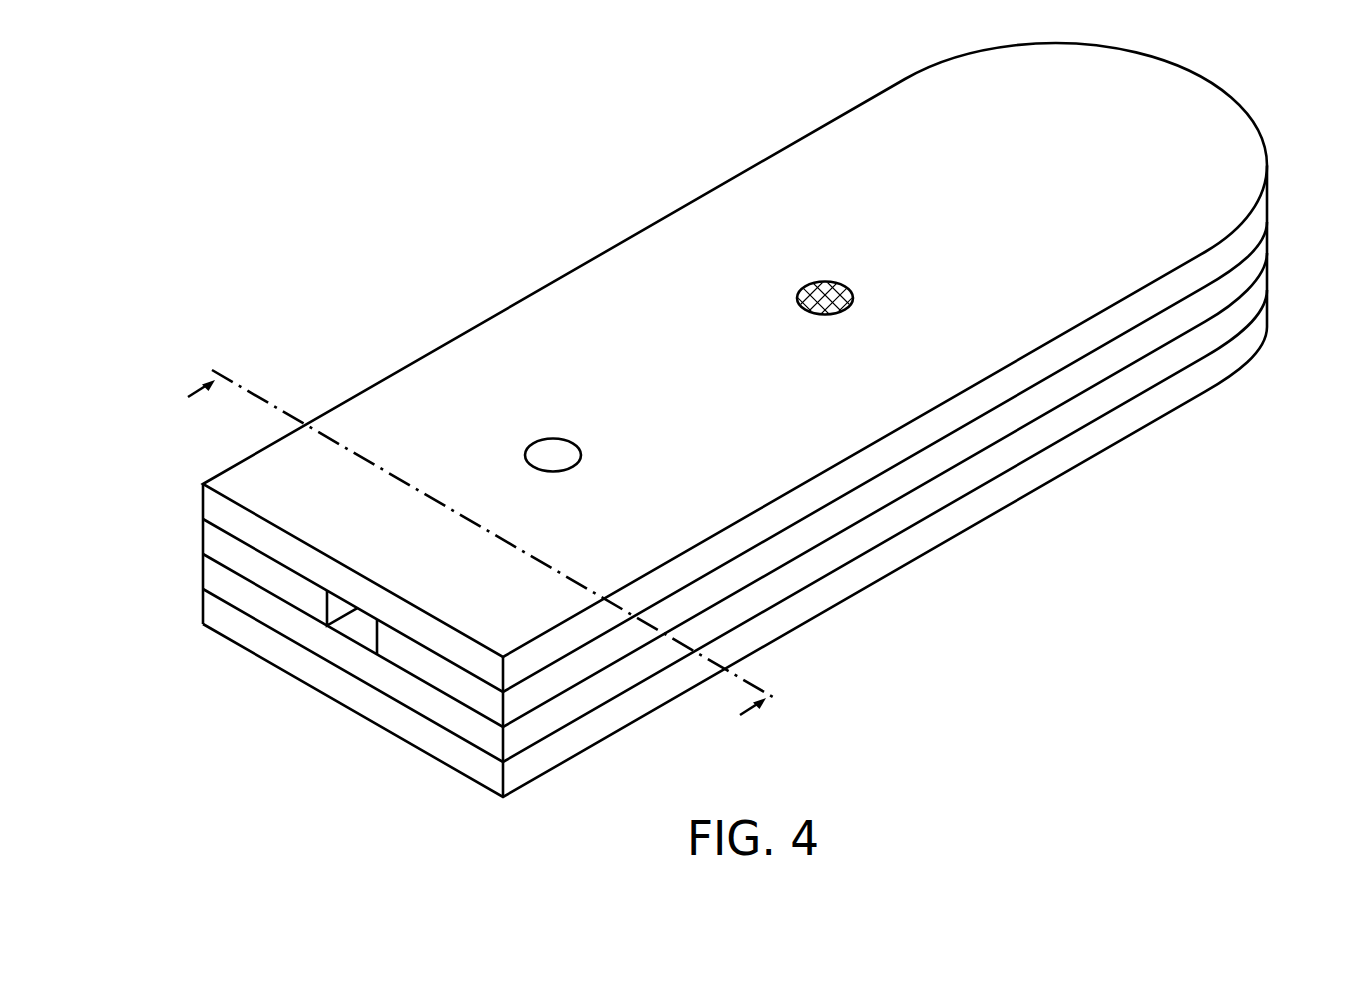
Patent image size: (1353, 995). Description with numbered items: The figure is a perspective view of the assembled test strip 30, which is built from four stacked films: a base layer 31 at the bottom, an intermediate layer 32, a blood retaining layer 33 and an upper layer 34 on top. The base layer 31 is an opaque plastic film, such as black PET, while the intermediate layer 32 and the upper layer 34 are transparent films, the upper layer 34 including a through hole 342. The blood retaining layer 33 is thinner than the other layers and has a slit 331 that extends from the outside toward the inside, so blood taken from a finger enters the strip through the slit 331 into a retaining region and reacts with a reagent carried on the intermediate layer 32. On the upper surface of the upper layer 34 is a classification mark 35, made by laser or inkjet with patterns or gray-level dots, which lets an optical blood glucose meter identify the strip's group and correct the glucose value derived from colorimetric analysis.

The test strip 30 is at (150, 138).
The base layer 31 is at (1264, 327).
The intermediate layer 32 is at (1264, 290).
The blood retaining layer 33 is at (1264, 253).
The slit 331 is at (356, 630).
The upper layer 34 is at (1264, 222).
The through hole 342 is at (553, 448).
The classification mark 35 is at (825, 290).